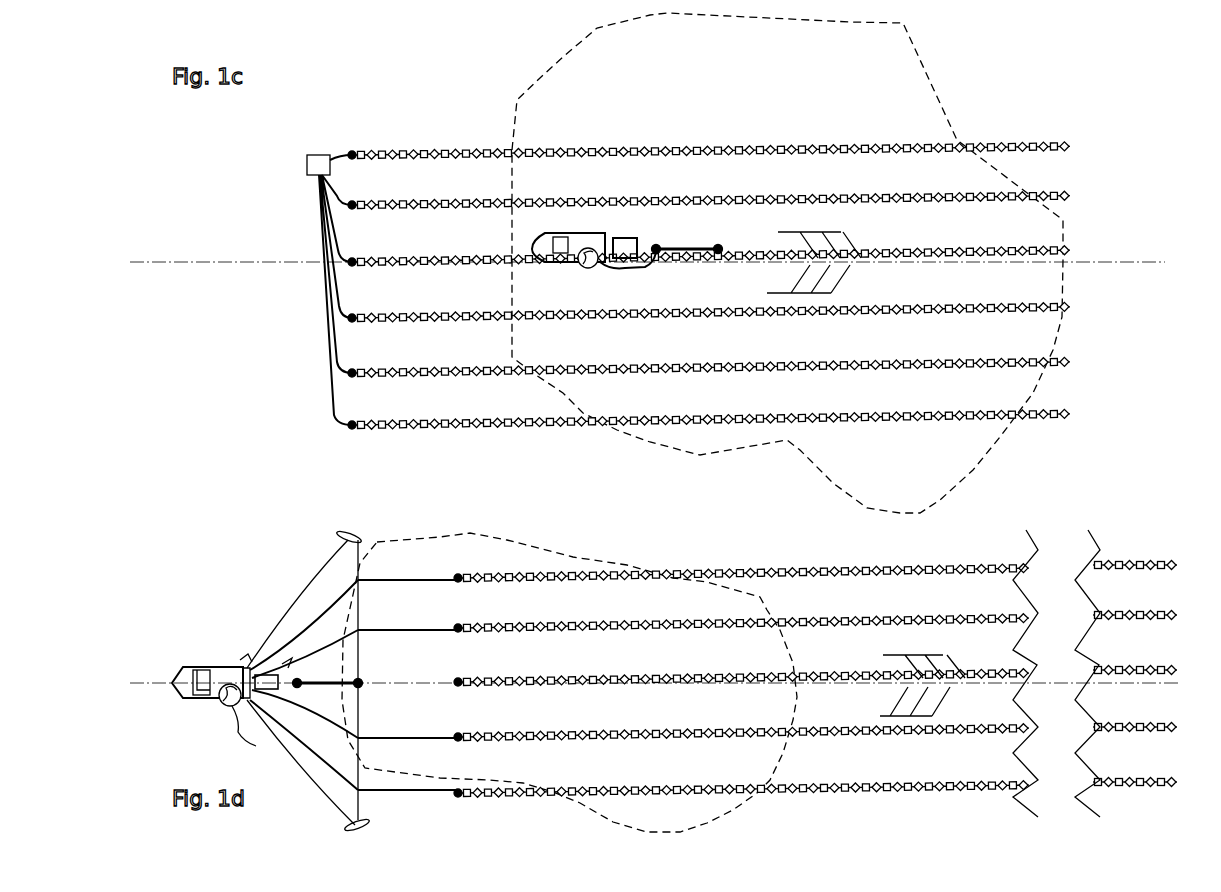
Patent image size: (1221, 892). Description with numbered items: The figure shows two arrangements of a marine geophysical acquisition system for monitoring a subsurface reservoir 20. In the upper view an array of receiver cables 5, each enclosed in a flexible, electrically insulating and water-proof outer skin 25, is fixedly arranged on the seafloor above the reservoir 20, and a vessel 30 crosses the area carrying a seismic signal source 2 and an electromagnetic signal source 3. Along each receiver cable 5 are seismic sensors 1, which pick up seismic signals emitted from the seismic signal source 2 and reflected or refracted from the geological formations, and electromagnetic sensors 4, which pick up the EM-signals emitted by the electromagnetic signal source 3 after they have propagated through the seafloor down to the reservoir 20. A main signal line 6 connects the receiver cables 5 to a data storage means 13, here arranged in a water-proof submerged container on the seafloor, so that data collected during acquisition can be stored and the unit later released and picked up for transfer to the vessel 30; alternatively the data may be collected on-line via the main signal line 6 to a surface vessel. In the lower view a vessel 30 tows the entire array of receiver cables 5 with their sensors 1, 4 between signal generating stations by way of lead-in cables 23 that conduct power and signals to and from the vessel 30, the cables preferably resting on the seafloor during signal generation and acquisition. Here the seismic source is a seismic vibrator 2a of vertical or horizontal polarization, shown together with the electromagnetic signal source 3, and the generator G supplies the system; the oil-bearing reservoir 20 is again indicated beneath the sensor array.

In FIG. 1C, the seismic sensors 1 is at (818, 233).
In FIG. 1D, the seismic sensors 1 is at (922, 655).
In FIG. 1C, the seismic signal source 2 is at (620, 236).
In FIG. 1D, the seismic vibrator 2a is at (257, 673).
In FIG. 1C, the electromagnetic signal source 3 is at (688, 246).
In FIG. 1D, the electromagnetic signal source 3 is at (326, 694).
In FIG. 1C, the electromagnetic sensors 4 is at (808, 279).
In FIG. 1D, the electromagnetic sensors 4 is at (911, 709).
In FIG. 1C, the receiver cable 5 is at (709, 249).
In FIG. 1D, the receiver cable 5 is at (815, 649).
In FIG. 1C, the main signal line 6 is at (295, 290).
In FIG. 1D, the main signal line 6 is at (349, 680).
In FIG. 1C, the data storage means 13 is at (317, 156).
In FIG. 1C, the reservoir 20 is at (692, 339).
In FIG. 1D, the reservoir 20 is at (695, 718).
In FIG. 1C, the lead-in cable 23 is at (325, 257).
In FIG. 1D, the lead-in cable 23 is at (330, 638).
In FIG. 1C, the outer skin 25 is at (817, 150).
In FIG. 1D, the outer skin 25 is at (843, 570).
In FIG. 1C, the vessel 30 is at (560, 232).
In FIG. 1D, the vessel 30 is at (205, 676).
In FIG. 1D, the generator G is at (250, 732).